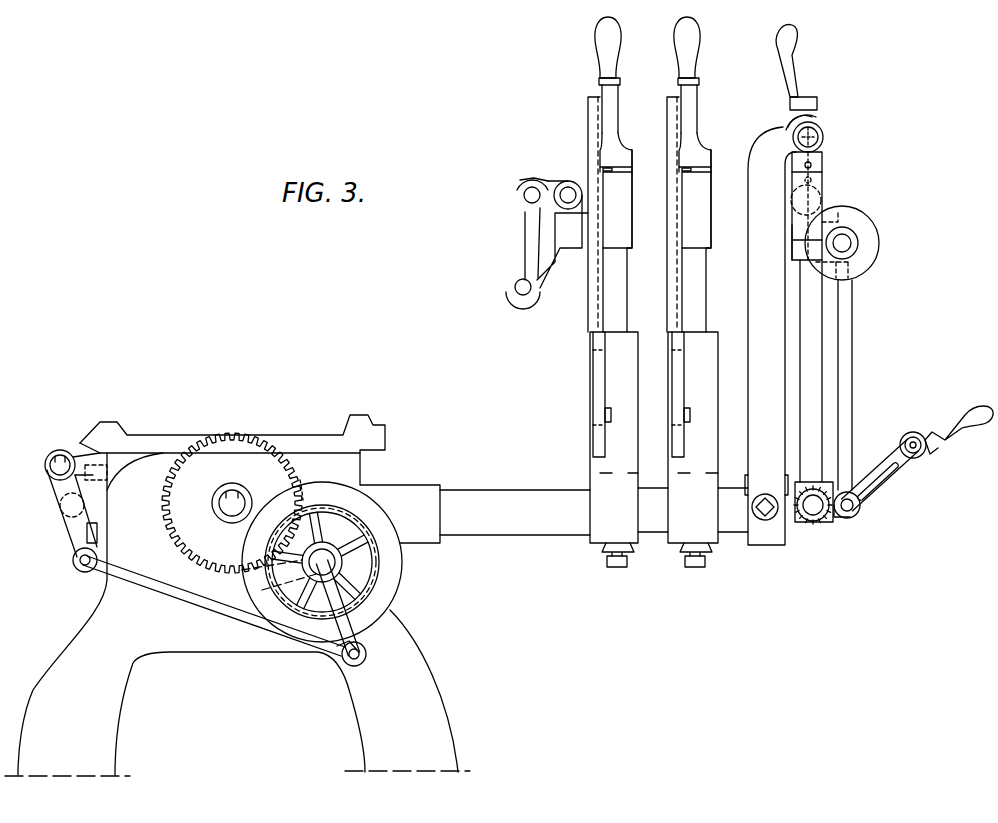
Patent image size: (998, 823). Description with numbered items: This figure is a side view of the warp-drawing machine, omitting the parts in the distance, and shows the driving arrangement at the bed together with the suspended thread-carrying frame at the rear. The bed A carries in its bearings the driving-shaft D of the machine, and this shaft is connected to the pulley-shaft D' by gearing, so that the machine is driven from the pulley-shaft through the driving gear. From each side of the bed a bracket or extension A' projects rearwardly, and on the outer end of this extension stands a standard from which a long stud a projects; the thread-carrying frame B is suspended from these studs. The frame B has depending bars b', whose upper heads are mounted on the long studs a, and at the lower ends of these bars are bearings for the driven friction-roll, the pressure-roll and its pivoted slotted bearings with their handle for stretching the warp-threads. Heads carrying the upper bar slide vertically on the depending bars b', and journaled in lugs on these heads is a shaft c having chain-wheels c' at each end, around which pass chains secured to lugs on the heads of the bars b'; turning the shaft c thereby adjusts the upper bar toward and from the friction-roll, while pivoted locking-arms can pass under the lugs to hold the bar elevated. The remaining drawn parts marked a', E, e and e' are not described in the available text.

The bed A is at (237, 589).
The brackets or extensions A' is at (594, 511).
The driving-shaft D is at (232, 503).
The pulley-shaft D' is at (322, 562).
The long studs a is at (816, 137).
The wheel rim a' is at (309, 480).
The slide block E is at (654, 449).
The plunger body e is at (651, 214).
The plunger handle e' is at (658, 75).
The thread-carrying frame B is at (820, 206).
The depending bars b' is at (811, 371).
The shaft c is at (842, 243).
The chain-wheels c' is at (840, 267).